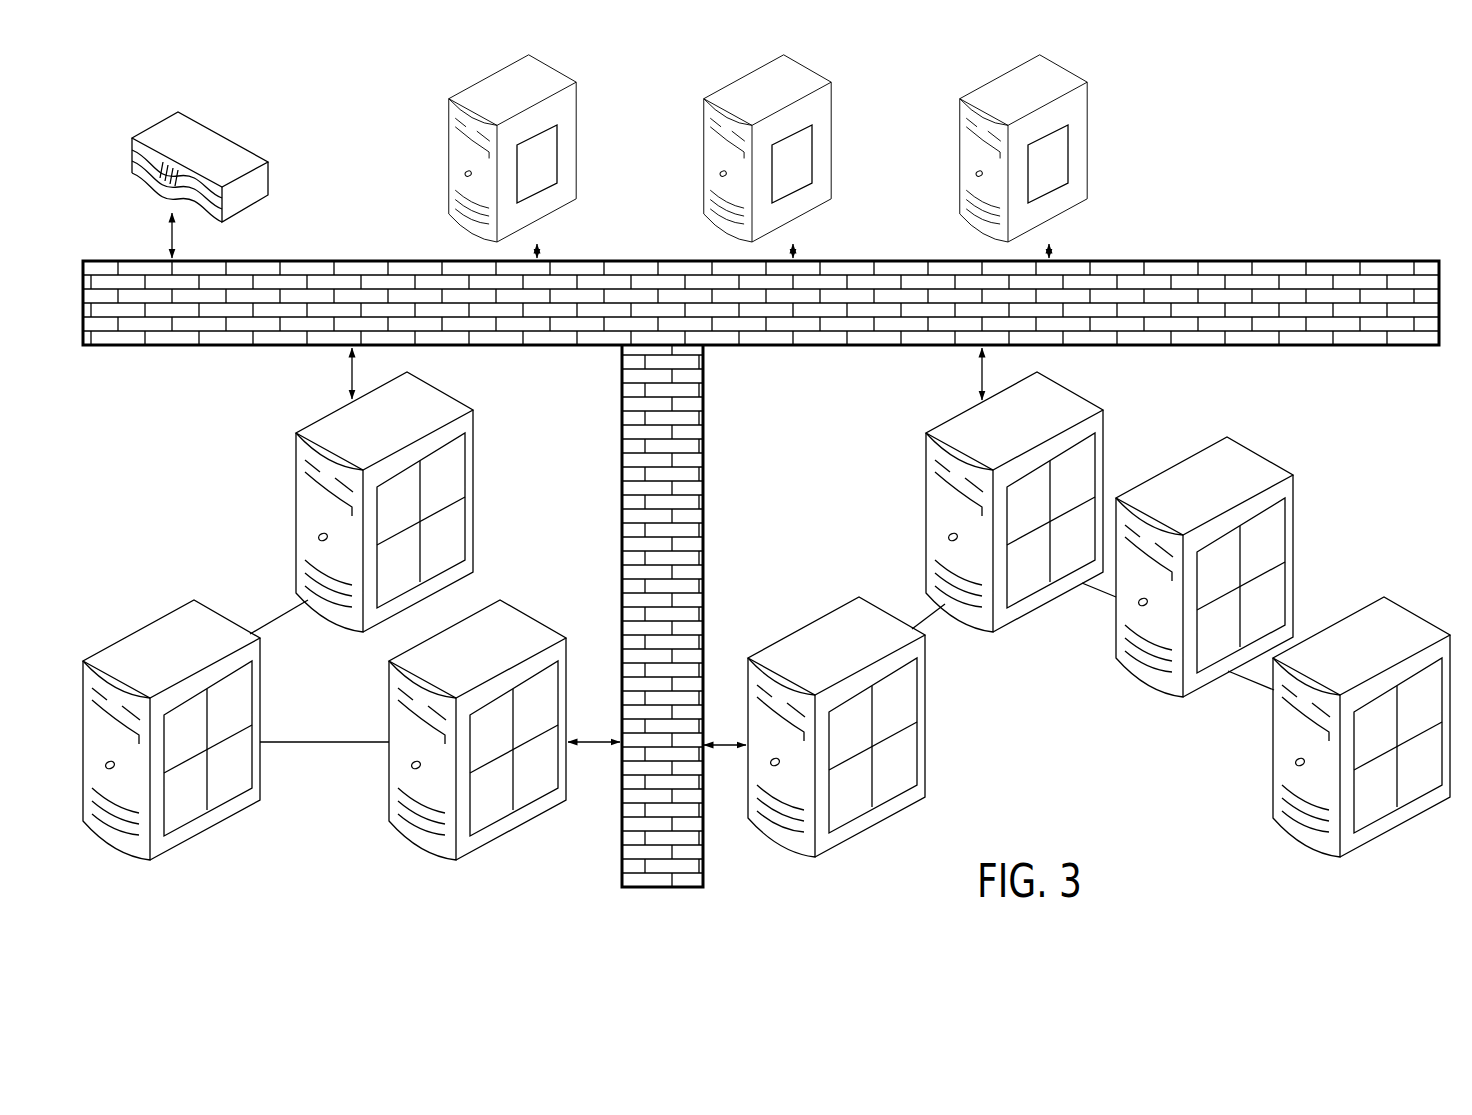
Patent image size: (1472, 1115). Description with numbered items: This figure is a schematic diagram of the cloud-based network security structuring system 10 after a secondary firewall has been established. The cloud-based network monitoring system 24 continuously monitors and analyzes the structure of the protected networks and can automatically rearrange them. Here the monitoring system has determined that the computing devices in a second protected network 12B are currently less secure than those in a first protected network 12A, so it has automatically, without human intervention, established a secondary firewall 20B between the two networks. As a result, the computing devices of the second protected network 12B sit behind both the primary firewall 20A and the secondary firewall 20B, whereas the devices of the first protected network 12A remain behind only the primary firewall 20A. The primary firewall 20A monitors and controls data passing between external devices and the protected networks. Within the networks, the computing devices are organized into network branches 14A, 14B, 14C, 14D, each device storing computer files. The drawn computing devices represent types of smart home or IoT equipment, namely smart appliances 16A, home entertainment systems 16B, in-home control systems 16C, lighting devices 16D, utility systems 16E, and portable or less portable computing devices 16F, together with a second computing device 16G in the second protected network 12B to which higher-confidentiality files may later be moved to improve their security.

The cloud-based network security structuring system 10 is at (1342, 104).
The first protected network 12A is at (515, 500).
The second protected network 12B is at (1330, 430).
The network branch 14A is at (222, 568).
The network branch 14B is at (327, 757).
The network branch 14C is at (885, 573).
The network branch 14D is at (1131, 699).
The smart appliance 16A is at (396, 502).
The home entertainment system 16B is at (208, 710).
The in-home control system 16C is at (501, 698).
The lighting device 16D is at (1010, 502).
The utility system 16E is at (875, 696).
The portable or less portable computing device 16F is at (1227, 537).
The second computing device 16G is at (1363, 693).
The primary firewall 20A is at (157, 348).
The secondary firewall 20B is at (705, 430).
The cloud-based network monitoring system 24 is at (152, 126).